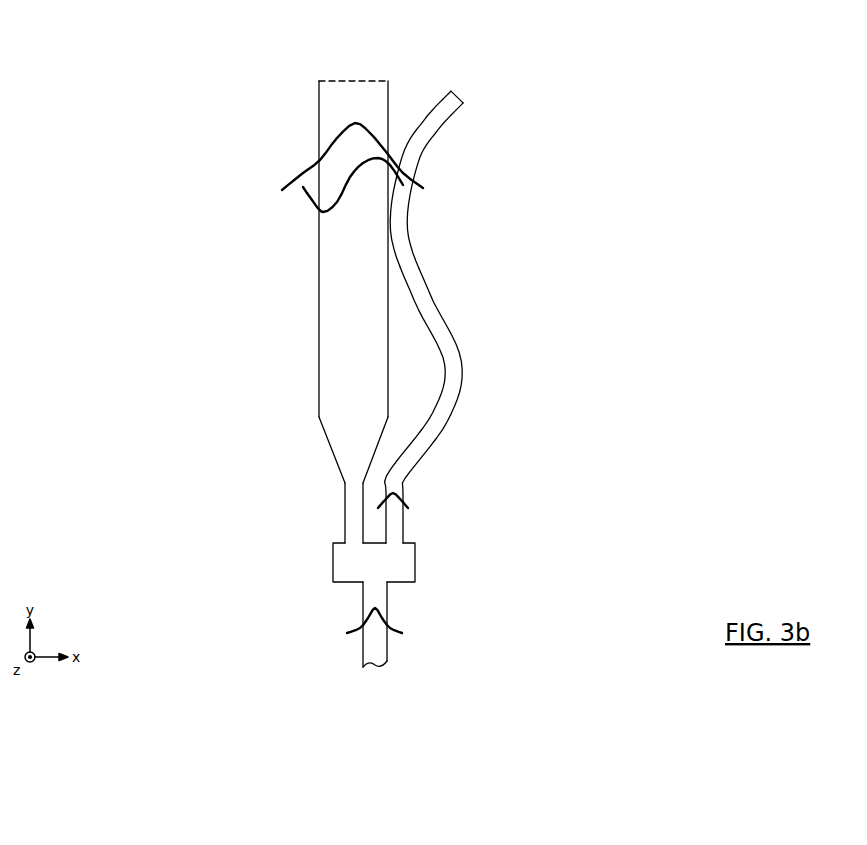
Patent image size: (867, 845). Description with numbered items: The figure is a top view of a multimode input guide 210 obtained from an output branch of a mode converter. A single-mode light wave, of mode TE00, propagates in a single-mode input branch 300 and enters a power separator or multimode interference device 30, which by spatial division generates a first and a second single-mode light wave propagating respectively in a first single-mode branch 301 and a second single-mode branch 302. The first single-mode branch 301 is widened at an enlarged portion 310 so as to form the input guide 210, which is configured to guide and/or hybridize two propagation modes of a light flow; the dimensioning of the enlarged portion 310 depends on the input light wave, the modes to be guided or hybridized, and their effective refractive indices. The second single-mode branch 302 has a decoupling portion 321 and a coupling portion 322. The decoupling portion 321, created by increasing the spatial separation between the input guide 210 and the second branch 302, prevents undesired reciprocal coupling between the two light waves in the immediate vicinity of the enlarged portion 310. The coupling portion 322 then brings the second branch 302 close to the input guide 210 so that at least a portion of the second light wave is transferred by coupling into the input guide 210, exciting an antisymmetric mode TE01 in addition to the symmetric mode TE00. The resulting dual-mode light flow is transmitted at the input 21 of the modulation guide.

The input of the modulation guide 21 is at (342, 80).
The multimode input guide 210 is at (319, 278).
The enlarged portion 310 is at (333, 448).
The first single-mode branch 301 is at (345, 510).
The second single-mode branch 302 is at (403, 483).
The decoupling portion 321 is at (462, 370).
The coupling portion 322 is at (410, 227).
The multimode interference device 30 is at (333, 563).
The single-mode input branch 300 is at (387, 650).
The symmetric propagation mode TE00 is at (311, 160).
The antisymmetric propagation mode TE01 is at (305, 203).